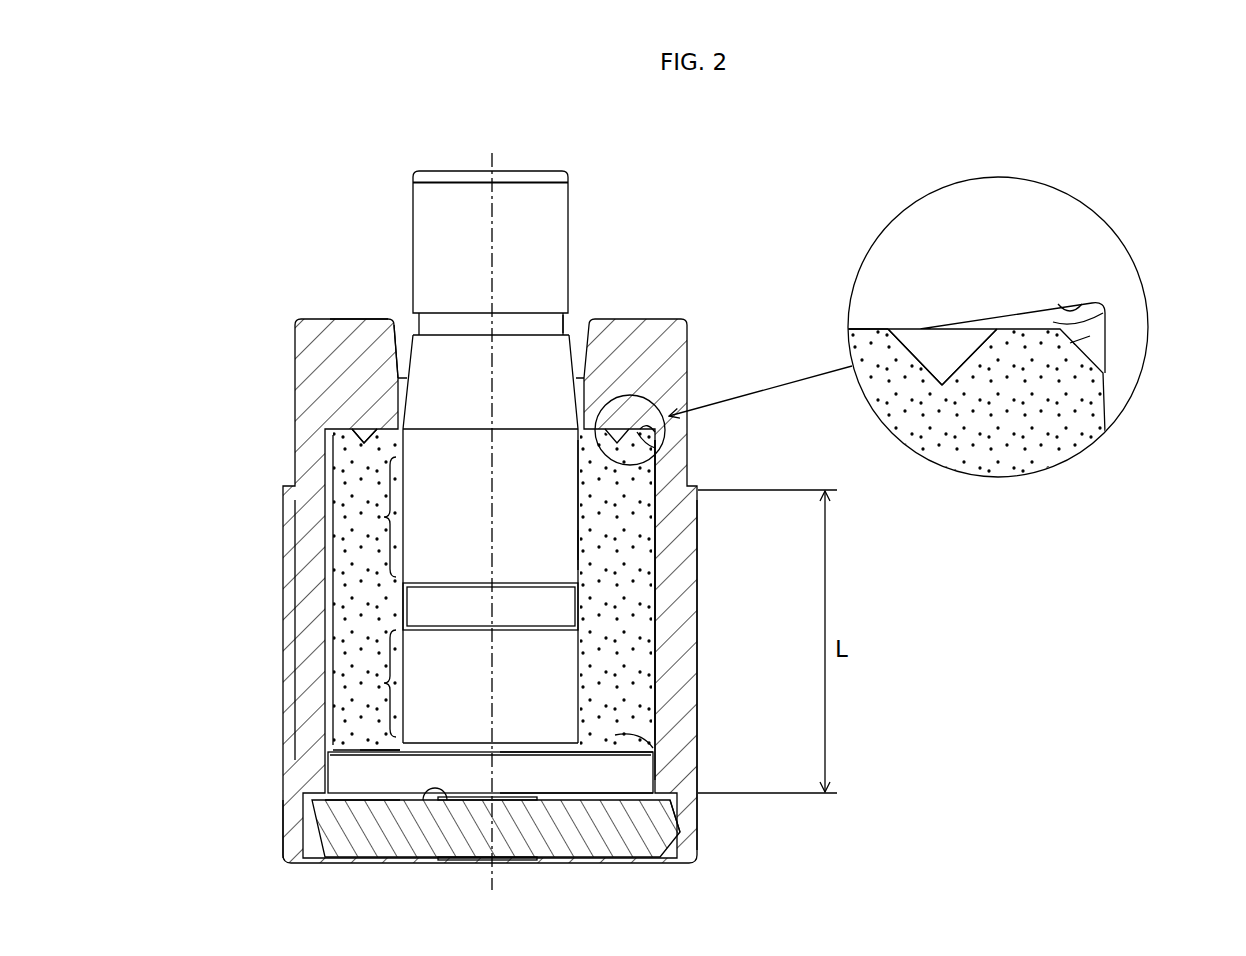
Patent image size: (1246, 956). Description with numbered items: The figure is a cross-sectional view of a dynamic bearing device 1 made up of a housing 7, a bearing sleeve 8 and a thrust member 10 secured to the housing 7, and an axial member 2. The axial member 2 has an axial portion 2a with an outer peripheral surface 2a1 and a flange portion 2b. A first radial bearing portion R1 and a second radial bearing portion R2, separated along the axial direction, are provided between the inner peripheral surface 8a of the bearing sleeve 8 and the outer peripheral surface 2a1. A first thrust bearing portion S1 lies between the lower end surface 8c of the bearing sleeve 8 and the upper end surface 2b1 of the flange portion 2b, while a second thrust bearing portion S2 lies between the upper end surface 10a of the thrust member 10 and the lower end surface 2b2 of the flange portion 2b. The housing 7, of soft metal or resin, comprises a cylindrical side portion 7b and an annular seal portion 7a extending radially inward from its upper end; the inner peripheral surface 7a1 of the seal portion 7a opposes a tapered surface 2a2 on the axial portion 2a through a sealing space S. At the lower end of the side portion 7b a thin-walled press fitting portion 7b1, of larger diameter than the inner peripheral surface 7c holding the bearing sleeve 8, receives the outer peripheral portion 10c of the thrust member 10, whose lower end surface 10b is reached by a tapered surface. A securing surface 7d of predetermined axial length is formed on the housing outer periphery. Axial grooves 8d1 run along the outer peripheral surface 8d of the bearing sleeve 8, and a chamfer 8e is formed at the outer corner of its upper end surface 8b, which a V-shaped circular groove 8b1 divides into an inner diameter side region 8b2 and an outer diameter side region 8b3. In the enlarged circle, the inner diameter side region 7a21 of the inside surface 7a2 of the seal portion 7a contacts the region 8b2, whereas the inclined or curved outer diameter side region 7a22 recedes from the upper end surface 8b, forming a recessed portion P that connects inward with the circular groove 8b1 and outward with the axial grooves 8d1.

The dynamic bearing device 1 is at (685, 296).
The axial member 2 is at (570, 229).
The axial portion 2a is at (513, 197).
The outer peripheral surface 2a1 is at (578, 495).
The tapered surface 2a2 is at (588, 350).
The flange portion 2b is at (635, 777).
The upper end surface 2b1 is at (653, 742).
The lower end surface 2b2 is at (627, 857).
The housing 7 is at (292, 360).
The seal portion 7a is at (340, 335).
The inner peripheral surface 7a1 is at (405, 388).
The inside surface 7a2 is at (642, 448).
The inner diameter side region 7a21 is at (851, 343).
The outer diameter side region 7a22 is at (1080, 305).
The side portion 7b is at (300, 622).
The press fitting portion 7b1 is at (295, 816).
The inner peripheral surface 7c is at (660, 602).
The securing surface 7d is at (698, 702).
The bearing sleeve 8 is at (630, 540).
The inner peripheral surface 8a is at (580, 527).
The upper end surface 8b is at (360, 428).
The circular groove 8b1 is at (910, 350).
The inner diameter side region 8b2 is at (866, 330).
The outer diameter side region 8b3 is at (1017, 327).
The lower end surface 8c is at (380, 755).
The outer peripheral surface 8d is at (655, 655).
The axial grooves 8d1 is at (330, 507).
The chamfer 8e is at (1072, 343).
The thrust member 10 is at (577, 843).
The upper end surface 10a is at (448, 800).
The lower end surface 10b is at (377, 860).
The outer peripheral portion 10c is at (681, 834).
The sealing space S is at (395, 322).
The first thrust bearing portion S1 is at (378, 748).
The second thrust bearing portion S2 is at (385, 801).
The first radial bearing portion R1 is at (376, 517).
The second radial bearing portion R2 is at (376, 682).
The recessed portion P is at (1100, 312).